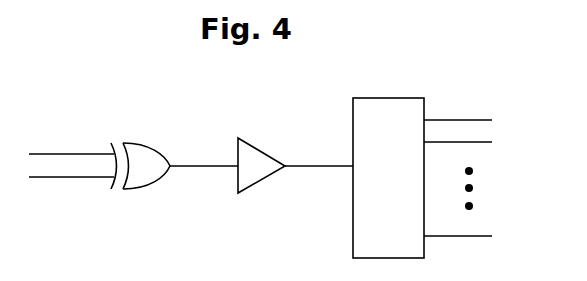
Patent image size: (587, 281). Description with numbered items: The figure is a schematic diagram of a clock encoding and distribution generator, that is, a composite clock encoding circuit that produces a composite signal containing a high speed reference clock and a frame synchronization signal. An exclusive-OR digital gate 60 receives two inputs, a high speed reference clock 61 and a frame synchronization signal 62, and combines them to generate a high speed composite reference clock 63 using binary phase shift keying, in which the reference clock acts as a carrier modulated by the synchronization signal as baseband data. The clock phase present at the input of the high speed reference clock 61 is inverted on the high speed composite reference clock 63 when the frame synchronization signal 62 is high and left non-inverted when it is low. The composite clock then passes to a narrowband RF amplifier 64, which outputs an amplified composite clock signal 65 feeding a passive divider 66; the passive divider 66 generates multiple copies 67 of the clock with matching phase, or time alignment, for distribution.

The exclusive-OR digital gate 60 is at (132, 143).
The high speed reference clock 61 is at (62, 153).
The frame synchronization signal 62 is at (85, 179).
The high speed composite reference clock 63 is at (222, 165).
The narrowband RF amplifier 64 is at (258, 150).
The amplified composite clock signal 65 is at (323, 168).
The passive divider 66 is at (388, 97).
The multiple copies 67 is at (459, 119).